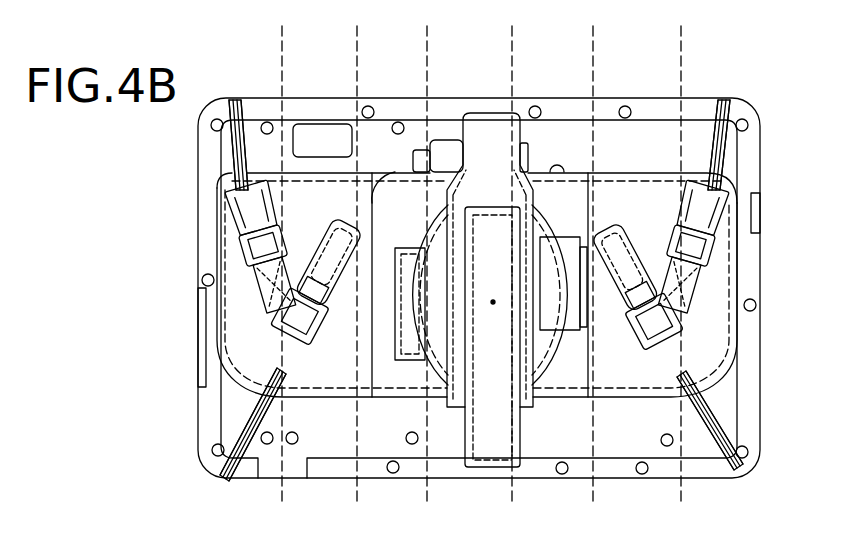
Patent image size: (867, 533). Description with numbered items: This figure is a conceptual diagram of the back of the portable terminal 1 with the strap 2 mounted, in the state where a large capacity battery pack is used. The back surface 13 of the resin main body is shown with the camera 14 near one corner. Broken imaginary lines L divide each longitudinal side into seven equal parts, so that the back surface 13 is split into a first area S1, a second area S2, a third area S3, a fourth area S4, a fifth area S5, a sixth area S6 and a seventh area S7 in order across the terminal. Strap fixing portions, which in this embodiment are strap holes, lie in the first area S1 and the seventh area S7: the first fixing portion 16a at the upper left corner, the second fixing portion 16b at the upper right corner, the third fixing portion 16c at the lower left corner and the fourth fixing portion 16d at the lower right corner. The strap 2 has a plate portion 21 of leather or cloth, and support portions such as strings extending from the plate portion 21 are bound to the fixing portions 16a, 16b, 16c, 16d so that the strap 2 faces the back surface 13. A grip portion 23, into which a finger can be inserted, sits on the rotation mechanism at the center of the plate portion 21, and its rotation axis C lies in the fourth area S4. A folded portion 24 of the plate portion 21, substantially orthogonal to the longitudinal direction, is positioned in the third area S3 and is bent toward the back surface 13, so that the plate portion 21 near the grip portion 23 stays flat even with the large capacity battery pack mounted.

The portable terminal 1 is at (757, 122).
The strap 2 is at (641, 173).
The back surface 13 is at (330, 433).
The camera 14 is at (330, 128).
The first fixing portion 16a is at (250, 106).
The second fixing portion 16b is at (713, 100).
The third fixing portion 16c is at (212, 470).
The fourth fixing portion 16d is at (737, 467).
The plate portion 21 is at (585, 195).
The grip portion 23 is at (495, 145).
The folded portion 24 is at (394, 182).
The rotation axis C is at (493, 305).
The imaginary line L is at (480, 257).
The first area S1 is at (257, 327).
The second area S2 is at (312, 205).
The third area S3 is at (385, 415).
The fourth area S4 is at (487, 185).
The fifth area S5 is at (560, 139).
The sixth area S6 is at (649, 207).
The seventh area S7 is at (705, 325).